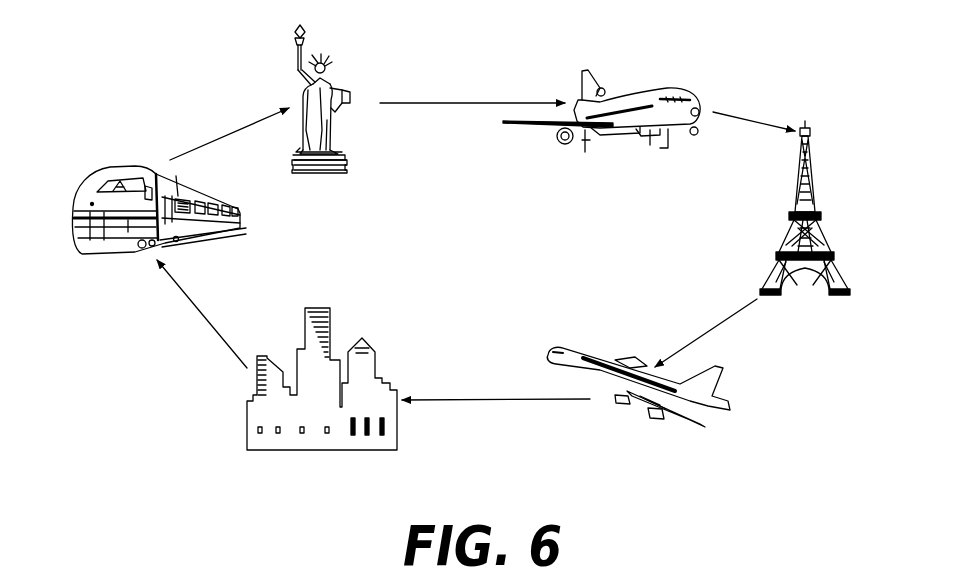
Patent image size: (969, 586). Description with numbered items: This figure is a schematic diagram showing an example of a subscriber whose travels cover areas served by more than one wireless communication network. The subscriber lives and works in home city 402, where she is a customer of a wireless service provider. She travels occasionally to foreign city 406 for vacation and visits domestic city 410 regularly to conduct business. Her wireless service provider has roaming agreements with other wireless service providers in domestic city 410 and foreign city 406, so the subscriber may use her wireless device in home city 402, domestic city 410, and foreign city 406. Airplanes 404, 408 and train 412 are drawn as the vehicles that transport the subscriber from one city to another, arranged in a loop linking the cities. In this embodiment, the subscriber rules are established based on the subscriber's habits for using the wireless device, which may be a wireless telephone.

The home city 402 is at (302, 83).
The airplane 404 is at (650, 90).
The foreign city 406 is at (815, 212).
The airplane 408 is at (715, 367).
The domestic city 410 is at (368, 350).
The train 412 is at (77, 207).